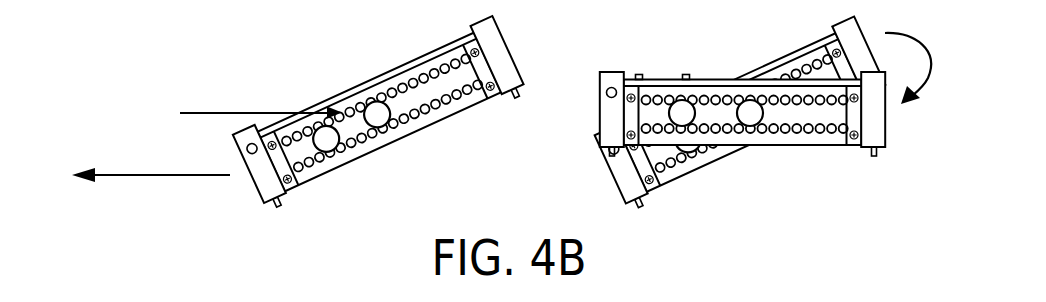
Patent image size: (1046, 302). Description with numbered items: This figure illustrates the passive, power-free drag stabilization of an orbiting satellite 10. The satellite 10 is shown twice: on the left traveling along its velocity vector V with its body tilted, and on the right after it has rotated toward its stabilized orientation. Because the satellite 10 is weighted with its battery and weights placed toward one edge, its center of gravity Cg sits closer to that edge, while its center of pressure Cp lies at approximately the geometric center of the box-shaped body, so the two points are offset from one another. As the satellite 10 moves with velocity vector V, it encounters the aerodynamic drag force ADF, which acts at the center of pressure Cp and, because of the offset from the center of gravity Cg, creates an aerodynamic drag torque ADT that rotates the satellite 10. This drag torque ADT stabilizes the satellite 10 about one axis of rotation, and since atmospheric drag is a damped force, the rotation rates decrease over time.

The satellite 10 is at (561, 113).
The center of gravity Cg is at (666, 113).
The center of pressure Cp is at (765, 114).
The aerodynamic drag force ADF is at (238, 115).
The velocity vector V is at (149, 163).
The aerodynamic drag torque ADT is at (908, 54).